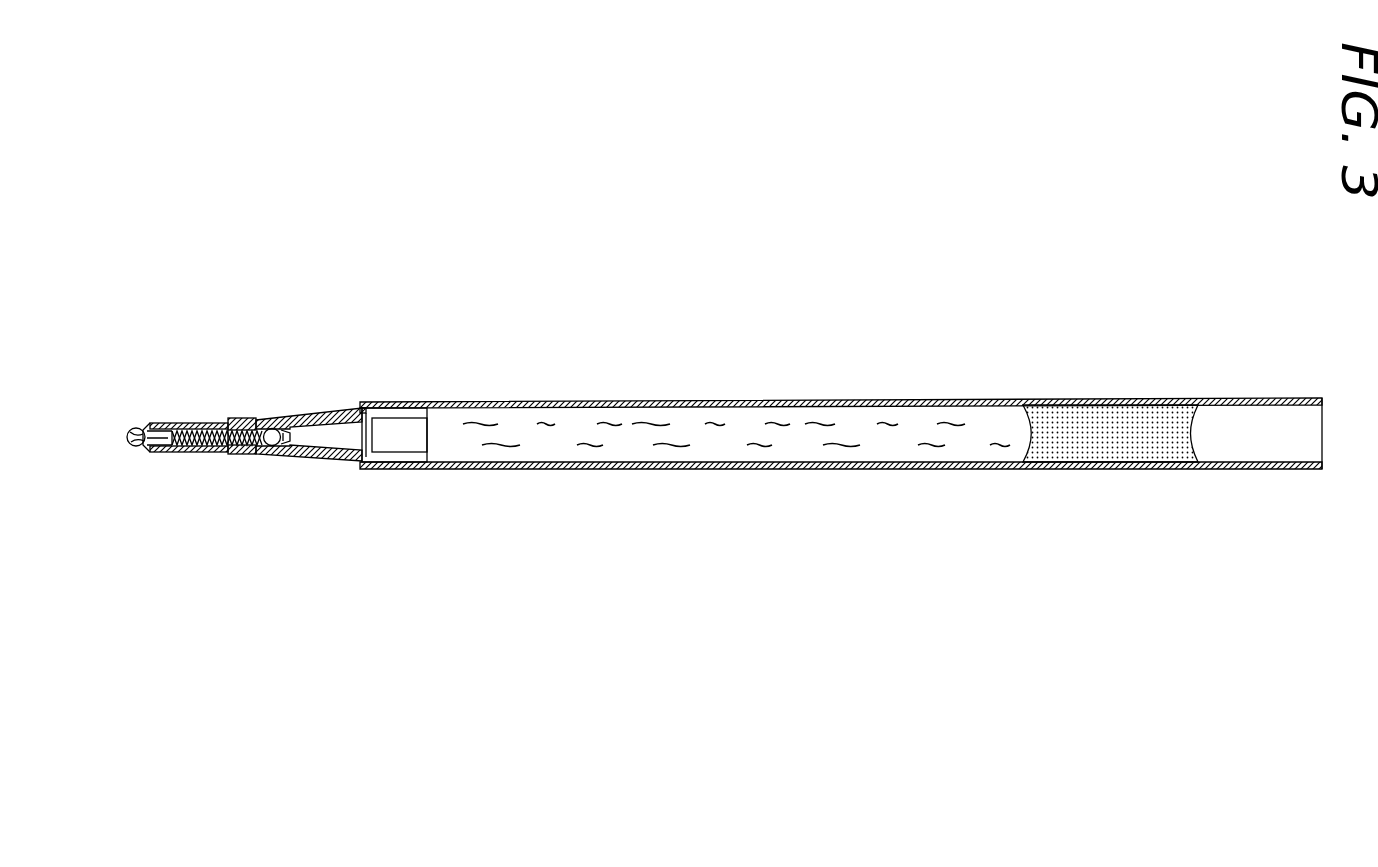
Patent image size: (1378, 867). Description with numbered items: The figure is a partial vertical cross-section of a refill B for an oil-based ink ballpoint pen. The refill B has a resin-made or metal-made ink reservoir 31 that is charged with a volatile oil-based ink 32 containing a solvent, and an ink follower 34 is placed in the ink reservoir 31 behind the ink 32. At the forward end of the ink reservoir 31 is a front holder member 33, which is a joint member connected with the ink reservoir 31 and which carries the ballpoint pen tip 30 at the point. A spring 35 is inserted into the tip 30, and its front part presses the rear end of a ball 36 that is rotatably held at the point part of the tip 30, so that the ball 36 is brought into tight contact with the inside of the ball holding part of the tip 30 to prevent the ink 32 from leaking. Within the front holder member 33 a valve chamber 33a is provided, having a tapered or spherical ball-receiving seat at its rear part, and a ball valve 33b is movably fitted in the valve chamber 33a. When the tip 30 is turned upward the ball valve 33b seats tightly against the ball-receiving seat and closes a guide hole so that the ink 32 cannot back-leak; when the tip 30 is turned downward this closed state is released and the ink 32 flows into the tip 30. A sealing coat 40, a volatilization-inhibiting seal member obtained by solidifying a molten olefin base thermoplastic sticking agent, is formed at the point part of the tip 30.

The refill for a ballpoint pen B is at (831, 373).
The ballpoint pen tip 30 is at (181, 423).
The ink reservoir 31 is at (736, 403).
The volatile oil-based ink 32 is at (948, 421).
The front holder member 33 is at (338, 412).
The valve chamber 33a is at (273, 428).
The ball valve 33b is at (274, 447).
The ink follower 34 is at (1121, 412).
The spring 35 is at (224, 418).
The ball 36 is at (143, 427).
The sealing coat 40 is at (129, 431).